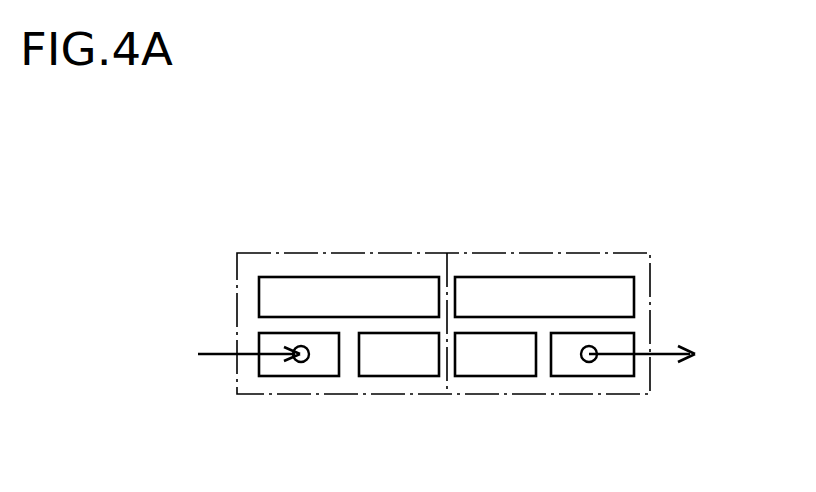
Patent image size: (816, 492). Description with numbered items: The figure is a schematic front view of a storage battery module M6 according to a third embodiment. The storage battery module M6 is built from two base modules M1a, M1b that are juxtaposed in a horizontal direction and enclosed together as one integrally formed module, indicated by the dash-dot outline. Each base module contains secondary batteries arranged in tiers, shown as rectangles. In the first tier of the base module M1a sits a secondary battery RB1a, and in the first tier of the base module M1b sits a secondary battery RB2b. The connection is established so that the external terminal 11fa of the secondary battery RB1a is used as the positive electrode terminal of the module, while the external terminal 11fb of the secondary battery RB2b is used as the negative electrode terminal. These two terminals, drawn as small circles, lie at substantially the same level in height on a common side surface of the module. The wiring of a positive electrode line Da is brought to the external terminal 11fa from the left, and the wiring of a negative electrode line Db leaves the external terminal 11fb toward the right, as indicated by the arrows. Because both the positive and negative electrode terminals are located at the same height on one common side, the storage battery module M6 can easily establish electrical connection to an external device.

The storage battery module M6 is at (637, 224).
The base module M1a is at (349, 291).
The base module M1b is at (544, 291).
The secondary battery RB1a is at (327, 376).
The secondary battery RB2b is at (608, 376).
The external terminal 11fa is at (305, 363).
The external terminal 11fb is at (587, 363).
The positive electrode line Da is at (227, 353).
The negative electrode line Db is at (662, 351).